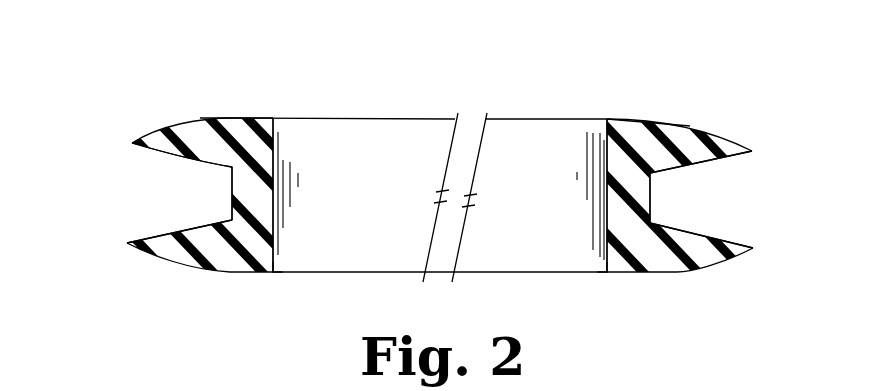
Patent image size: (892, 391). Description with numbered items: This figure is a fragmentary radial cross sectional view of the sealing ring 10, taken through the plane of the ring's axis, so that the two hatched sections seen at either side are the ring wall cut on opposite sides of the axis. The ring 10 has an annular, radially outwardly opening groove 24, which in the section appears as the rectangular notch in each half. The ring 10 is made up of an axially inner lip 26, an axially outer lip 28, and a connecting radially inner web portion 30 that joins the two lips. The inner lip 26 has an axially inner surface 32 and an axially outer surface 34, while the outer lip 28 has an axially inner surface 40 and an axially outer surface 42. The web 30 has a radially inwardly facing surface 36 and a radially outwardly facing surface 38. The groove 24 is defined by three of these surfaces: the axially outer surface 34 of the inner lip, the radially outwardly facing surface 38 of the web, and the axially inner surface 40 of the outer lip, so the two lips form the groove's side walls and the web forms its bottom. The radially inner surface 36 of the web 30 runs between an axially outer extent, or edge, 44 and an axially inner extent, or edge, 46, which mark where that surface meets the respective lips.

The ring 10 is at (187, 84).
The annular, radially outwardly opening groove 24 is at (90, 191).
The axially inner lip 26 is at (210, 279).
The axially outer lip 28 is at (160, 116).
The radially inner web portion 30 is at (257, 212).
The axially inner surface of inner lip 32 is at (163, 257).
The axially outer surface of inner lip 34 is at (163, 238).
The radially inwardly facing surface of web 36 is at (276, 153).
The radially outwardly facing surface of web 38 is at (231, 191).
The axially inner surface of outer lip 40 is at (131, 146).
The axially outer surface of outer lip 42 is at (225, 118).
The axially outer edge of web inner surface 44 is at (274, 121).
The axially inner edge of web inner surface 46 is at (272, 272).